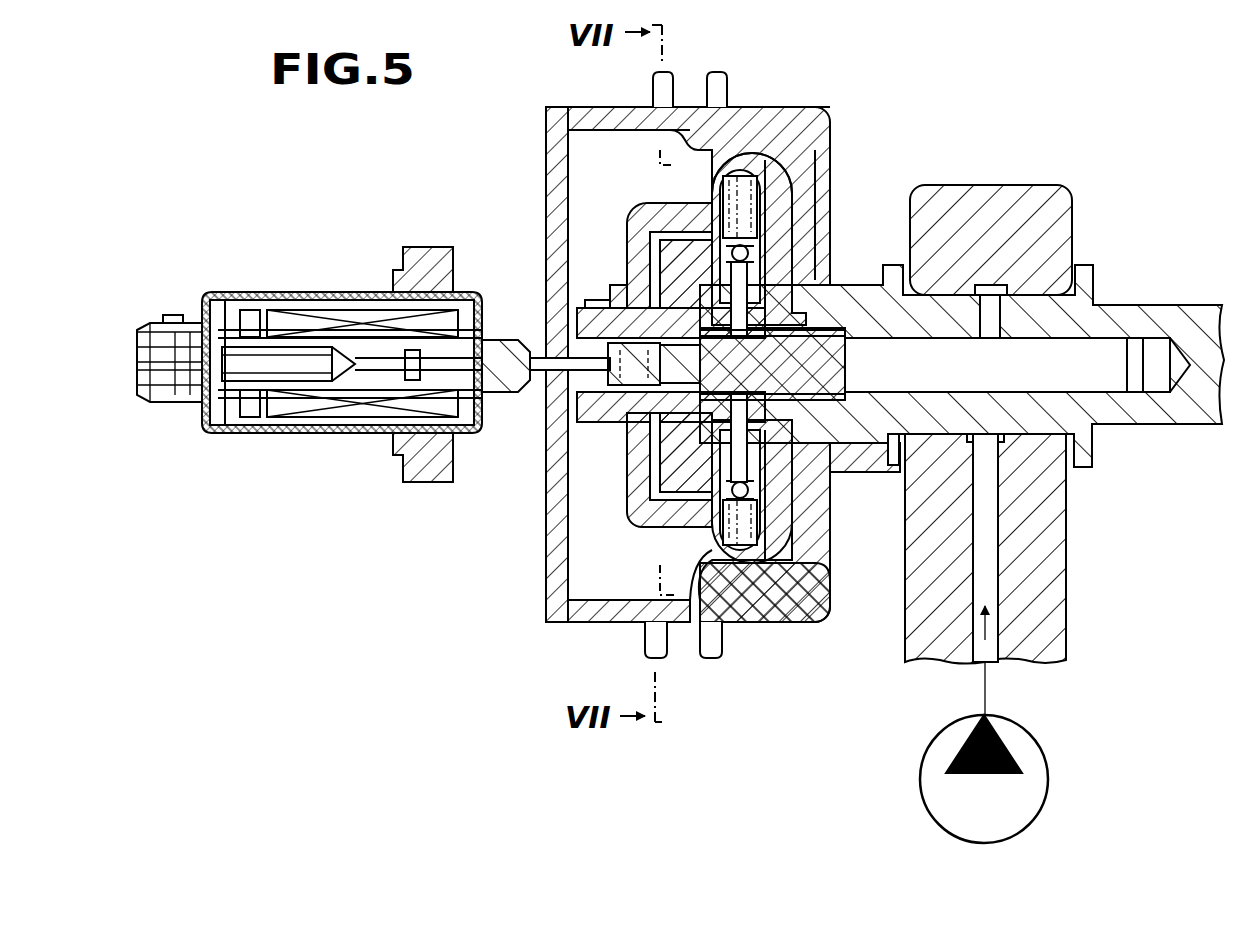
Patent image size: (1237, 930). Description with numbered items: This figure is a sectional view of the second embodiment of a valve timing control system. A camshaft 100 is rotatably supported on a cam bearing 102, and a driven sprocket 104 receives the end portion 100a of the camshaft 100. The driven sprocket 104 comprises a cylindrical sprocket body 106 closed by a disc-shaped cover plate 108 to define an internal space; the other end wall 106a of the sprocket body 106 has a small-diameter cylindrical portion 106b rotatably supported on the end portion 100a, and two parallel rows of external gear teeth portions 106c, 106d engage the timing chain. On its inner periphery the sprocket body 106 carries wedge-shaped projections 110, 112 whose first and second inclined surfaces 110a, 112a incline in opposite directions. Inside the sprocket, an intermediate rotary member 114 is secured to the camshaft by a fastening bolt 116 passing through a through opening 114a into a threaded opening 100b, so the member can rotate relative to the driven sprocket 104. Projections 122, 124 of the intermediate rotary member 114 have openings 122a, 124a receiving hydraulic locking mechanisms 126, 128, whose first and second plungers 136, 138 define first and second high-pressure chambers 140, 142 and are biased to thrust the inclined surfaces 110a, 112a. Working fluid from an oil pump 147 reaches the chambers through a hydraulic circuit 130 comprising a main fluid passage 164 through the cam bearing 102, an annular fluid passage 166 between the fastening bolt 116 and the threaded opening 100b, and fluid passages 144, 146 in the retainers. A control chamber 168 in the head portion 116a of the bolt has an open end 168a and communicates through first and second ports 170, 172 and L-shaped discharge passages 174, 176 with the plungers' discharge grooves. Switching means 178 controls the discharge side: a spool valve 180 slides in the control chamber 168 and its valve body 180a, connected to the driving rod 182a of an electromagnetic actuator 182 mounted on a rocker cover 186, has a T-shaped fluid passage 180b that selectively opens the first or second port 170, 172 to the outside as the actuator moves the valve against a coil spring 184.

The camshaft 100 is at (1182, 305).
The end portion of the camshaft 100a is at (870, 285).
The threaded opening 100b is at (935, 335).
The cam bearing 102 is at (1040, 188).
The driven sprocket 104 is at (832, 99).
The sprocket body 106 is at (612, 107).
The other end wall of the sprocket body 106a is at (780, 552).
The small-diameter cylindrical portion 106b is at (800, 468).
The gear teeth portion 106c is at (666, 72).
The gear teeth portion 106d is at (722, 72).
The cover plate 108 is at (546, 590).
The wedge-shaped projection 110 is at (768, 140).
The first inclined surface 110a is at (800, 140).
The wedge-shaped projection 112 is at (740, 592).
The second inclined surface 112a is at (775, 600).
The intermediate rotary member 114 is at (640, 205).
The through opening 114a is at (792, 505).
The fastening bolt 116 is at (838, 285).
The head portion of the fastening bolt 116a is at (590, 304).
The projection 122 is at (795, 185).
The opening 122a is at (668, 275).
The projection 124 is at (688, 620).
The opening 124a is at (722, 605).
The hydraulic locking mechanism 126 is at (705, 175).
The hydraulic locking mechanism 128 is at (697, 610).
The hydraulic circuit 130 is at (1012, 522).
The first plunger 136 is at (815, 150).
The second plunger 138 is at (790, 585).
The first high-pressure chamber 140 is at (740, 185).
The second high-pressure chamber 142 is at (755, 560).
The fluid passage 144 is at (770, 205).
The fluid passage 146 is at (765, 522).
The oil pump 147 is at (1048, 765).
The main fluid passage 164 is at (1000, 418).
The annular fluid passage 166 is at (1000, 472).
The control chamber 168 is at (600, 410).
The open end 168a is at (575, 418).
The first port 170 is at (588, 345).
The second port 172 is at (662, 416).
The L-shaped discharge passage 174 is at (655, 240).
The L-shaped discharge passage 176 is at (690, 500).
The switching means 178 is at (322, 445).
The spool valve 180 is at (615, 425).
The valve body 180a is at (640, 405).
The T-shaped fluid passage 180b is at (792, 396).
The electromagnetic actuator 182 is at (170, 405).
The driving rod 182a is at (556, 385).
The coil spring 184 is at (790, 338).
The rocker cover 186 is at (415, 262).